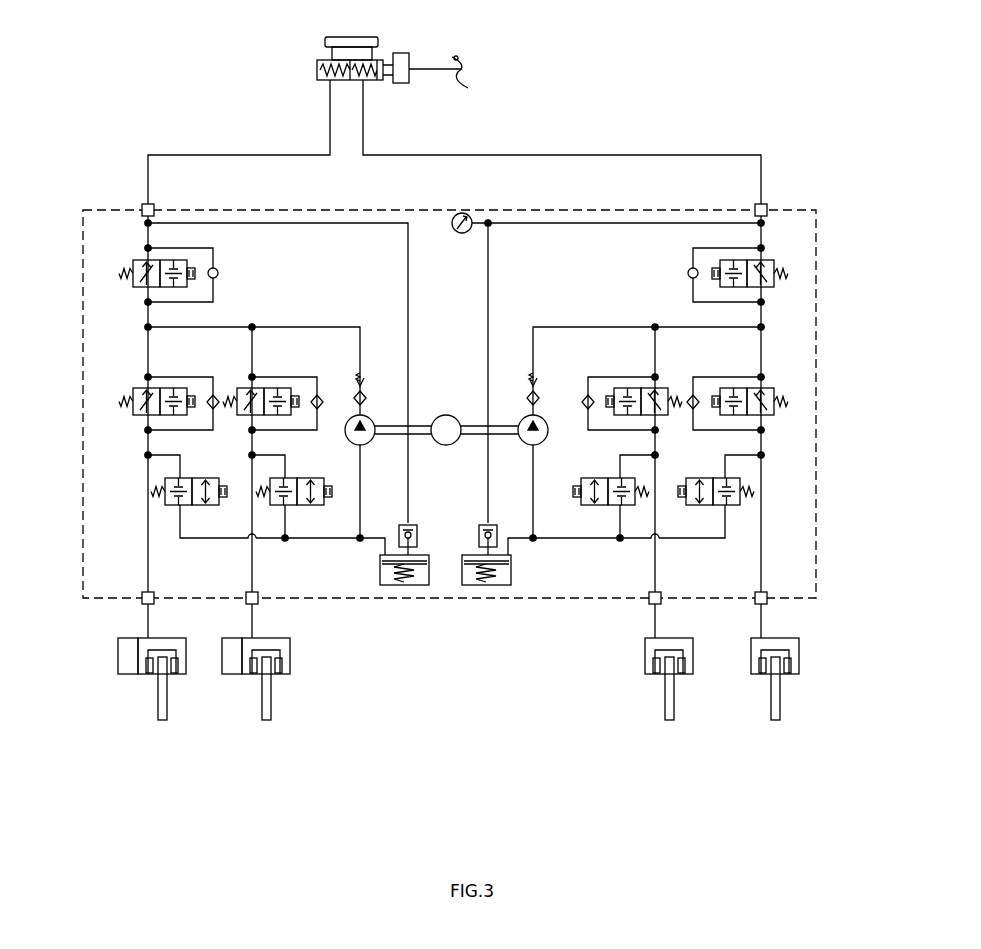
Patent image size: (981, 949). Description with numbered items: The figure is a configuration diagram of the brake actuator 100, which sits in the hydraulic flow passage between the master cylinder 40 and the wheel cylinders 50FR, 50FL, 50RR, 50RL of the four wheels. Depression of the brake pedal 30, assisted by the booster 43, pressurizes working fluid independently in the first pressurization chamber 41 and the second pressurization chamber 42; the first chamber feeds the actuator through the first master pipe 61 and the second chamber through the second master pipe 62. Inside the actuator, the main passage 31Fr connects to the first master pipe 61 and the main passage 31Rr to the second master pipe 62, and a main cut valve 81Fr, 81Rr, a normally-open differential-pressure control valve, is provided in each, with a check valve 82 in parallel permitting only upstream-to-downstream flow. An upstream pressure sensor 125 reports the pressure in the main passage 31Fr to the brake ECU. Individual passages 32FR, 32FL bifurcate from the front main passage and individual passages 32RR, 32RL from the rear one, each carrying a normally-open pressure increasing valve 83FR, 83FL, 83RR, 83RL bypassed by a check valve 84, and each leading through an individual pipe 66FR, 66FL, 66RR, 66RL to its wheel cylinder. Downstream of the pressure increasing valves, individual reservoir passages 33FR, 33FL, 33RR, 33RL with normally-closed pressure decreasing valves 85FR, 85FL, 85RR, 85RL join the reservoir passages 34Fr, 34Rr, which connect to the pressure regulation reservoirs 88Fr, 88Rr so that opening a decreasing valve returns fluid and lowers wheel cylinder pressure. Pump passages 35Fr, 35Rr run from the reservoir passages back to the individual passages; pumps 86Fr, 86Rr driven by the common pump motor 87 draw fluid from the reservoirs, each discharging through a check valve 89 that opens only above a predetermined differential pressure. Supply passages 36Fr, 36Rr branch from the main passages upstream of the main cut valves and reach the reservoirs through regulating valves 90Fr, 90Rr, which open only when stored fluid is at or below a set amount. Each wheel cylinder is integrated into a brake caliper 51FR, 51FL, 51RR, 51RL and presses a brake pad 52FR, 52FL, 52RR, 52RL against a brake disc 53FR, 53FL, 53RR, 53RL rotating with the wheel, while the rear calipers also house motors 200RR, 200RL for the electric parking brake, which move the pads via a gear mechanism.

The brake pedal 30 is at (472, 72).
The master cylinder 40 is at (322, 26).
The first pressurization chamber 41 is at (368, 82).
The second pressurization chamber 42 is at (320, 82).
The booster 43 is at (400, 53).
The first master pipe 61 is at (402, 152).
The second master pipe 62 is at (292, 152).
The brake actuator 100 is at (817, 247).
The upstream pressure sensor 125 is at (463, 234).
The main passage 31Rr is at (150, 240).
The main passage 31Fr is at (757, 239).
The check valve 82 is at (219, 273).
The supply passage 36Rr is at (317, 225).
The supply passage 36Fr is at (540, 225).
The main cut valve 81Rr is at (138, 290).
The main cut valve 81Fr is at (765, 292).
The pump passage 35Rr is at (303, 327).
The pump passage 35Fr is at (556, 327).
The pump 86Rr is at (368, 392).
The pump 86Fr is at (528, 382).
The check valve 89 is at (362, 376).
The pump motor 87 is at (448, 413).
The check valve 84 is at (320, 395).
The pressure increasing valve 83RL is at (137, 388).
The pressure increasing valve 83RR is at (240, 388).
The pressure increasing valve 83FL is at (661, 388).
The pressure increasing valve 83FR is at (768, 388).
The individual passage 32RL is at (152, 343).
The individual passage 32RR is at (256, 343).
The individual passage 32FL is at (652, 344).
The individual passage 32FR is at (757, 352).
The pressure decreasing valve 85RL is at (200, 478).
The pressure decreasing valve 85RR is at (316, 478).
The pressure decreasing valve 85FL is at (584, 478).
The pressure decreasing valve 85FR is at (695, 478).
The individual reservoir passage 33RL is at (183, 522).
The individual reservoir passage 33RR is at (288, 522).
The individual reservoir passage 33FL is at (617, 522).
The individual reservoir passage 33FR is at (723, 522).
The reservoir passage 34Rr is at (303, 541).
The reservoir passage 34Fr is at (570, 541).
The regulating valve 90Rr is at (400, 522).
The regulating valve 90Fr is at (495, 522).
The pressure regulation reservoir 88Rr is at (428, 555).
The pressure regulation reservoir 88Fr is at (465, 555).
The wheel cylinder 50RL is at (146, 604).
The wheel cylinder 50RR is at (250, 604).
The wheel cylinder 50FL is at (652, 604).
The wheel cylinder 50FR is at (758, 604).
The individual pipe 66RL is at (150, 627).
The individual pipe 66RR is at (254, 624).
The individual pipe 66FL is at (657, 627).
The individual pipe 66FR is at (763, 627).
The motor 200RL is at (116, 656).
The motor 200RR is at (190, 662).
The brake caliper 51RL is at (188, 668).
The brake caliper 51RR is at (292, 657).
The brake caliper 51FL is at (696, 666).
The brake caliper 51FR is at (800, 657).
The brake pad 52RL is at (152, 676).
The brake pad 52RR is at (256, 676).
The brake pad 52FL is at (657, 676).
The brake pad 52FR is at (763, 676).
The brake disc 53RL is at (162, 722).
The brake disc 53RR is at (266, 722).
The brake disc 53FL is at (669, 722).
The brake disc 53FR is at (775, 722).